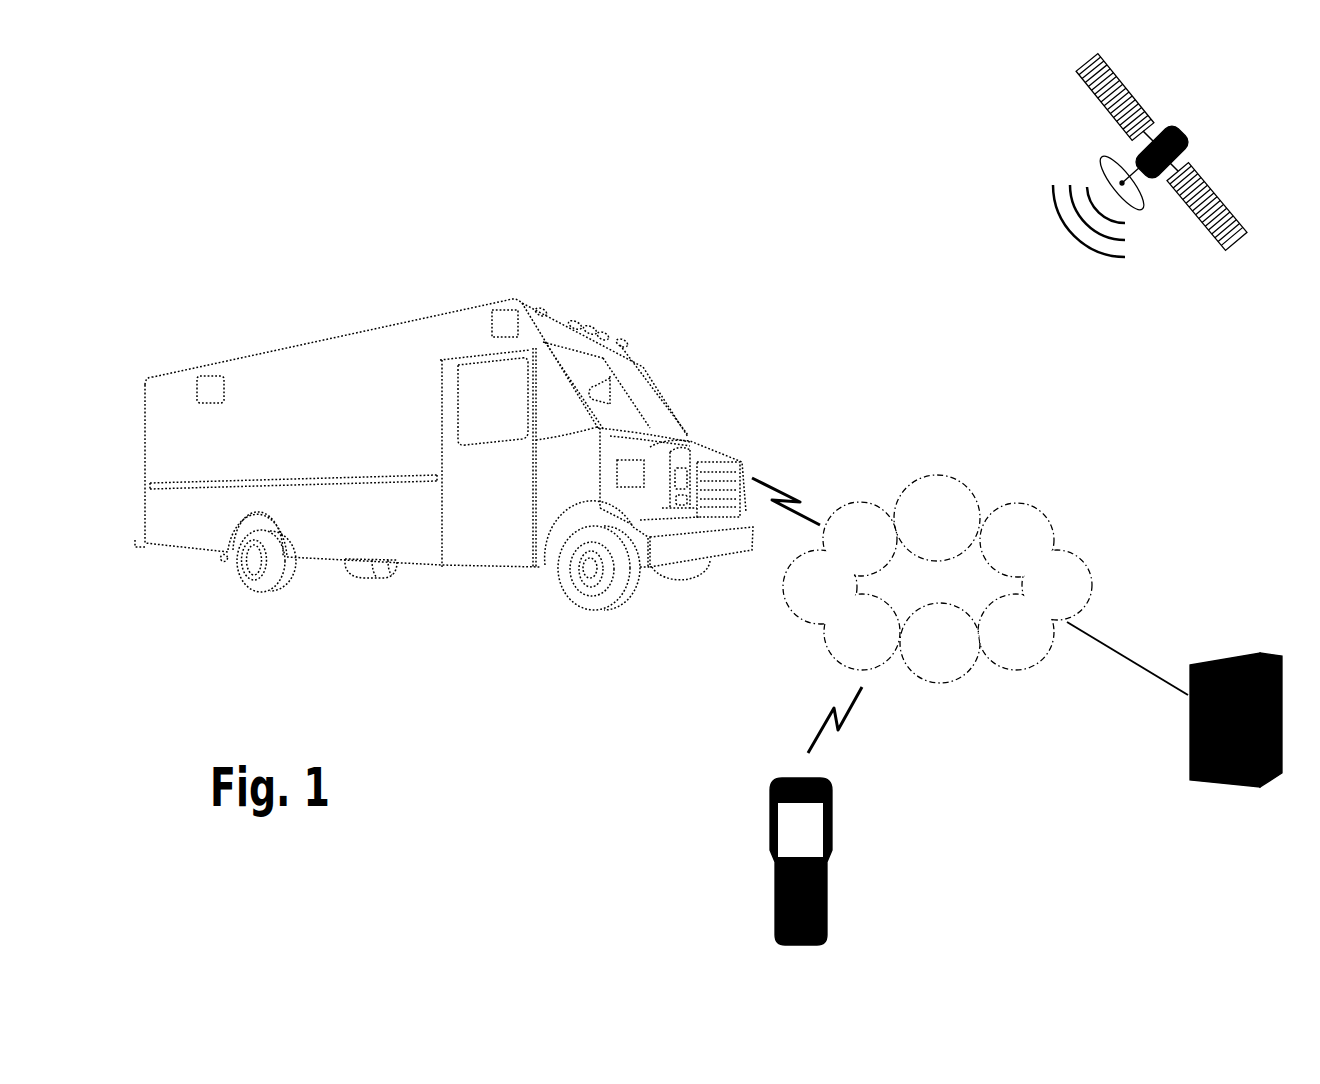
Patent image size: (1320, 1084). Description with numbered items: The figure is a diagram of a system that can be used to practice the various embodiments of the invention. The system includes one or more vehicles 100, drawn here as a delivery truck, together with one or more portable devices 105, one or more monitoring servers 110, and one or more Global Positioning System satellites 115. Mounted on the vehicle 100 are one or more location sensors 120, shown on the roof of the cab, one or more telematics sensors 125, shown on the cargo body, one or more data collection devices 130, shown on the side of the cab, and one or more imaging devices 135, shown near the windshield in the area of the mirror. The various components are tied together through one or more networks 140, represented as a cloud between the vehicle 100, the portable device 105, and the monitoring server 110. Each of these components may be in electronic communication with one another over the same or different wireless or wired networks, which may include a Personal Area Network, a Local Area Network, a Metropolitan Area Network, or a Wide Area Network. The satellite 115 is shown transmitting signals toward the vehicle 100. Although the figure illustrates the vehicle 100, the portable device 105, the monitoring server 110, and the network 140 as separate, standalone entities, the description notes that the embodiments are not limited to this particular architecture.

The vehicle 100 is at (330, 338).
The portable device 105 is at (787, 777).
The monitoring server 110 is at (1210, 655).
The Global Positioning System (GPS) satellite 115 is at (1137, 155).
The location sensor 120 is at (502, 323).
The telematics sensor 125 is at (210, 387).
The data collection device 130 is at (632, 473).
The imaging device 135 is at (604, 378).
The network 140 is at (937, 579).